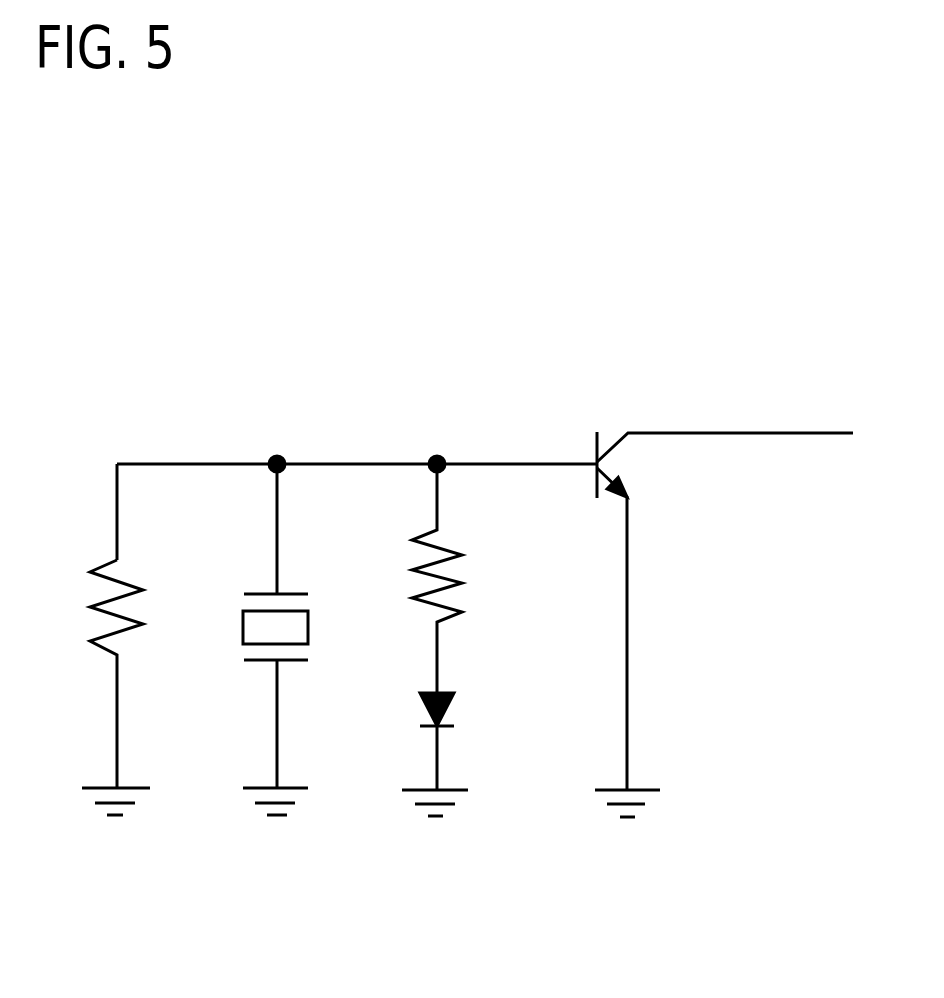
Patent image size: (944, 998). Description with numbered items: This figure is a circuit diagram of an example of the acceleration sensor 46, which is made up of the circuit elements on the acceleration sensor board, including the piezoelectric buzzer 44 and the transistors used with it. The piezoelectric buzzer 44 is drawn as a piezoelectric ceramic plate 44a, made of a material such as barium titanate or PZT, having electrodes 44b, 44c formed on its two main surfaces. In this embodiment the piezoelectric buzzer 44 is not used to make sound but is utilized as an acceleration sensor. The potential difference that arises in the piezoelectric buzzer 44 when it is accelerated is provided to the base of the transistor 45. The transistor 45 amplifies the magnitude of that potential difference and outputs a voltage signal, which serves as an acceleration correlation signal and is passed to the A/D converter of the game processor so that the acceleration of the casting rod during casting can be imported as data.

The piezoelectric buzzer 44 is at (279, 612).
The piezoelectric ceramic plate 44a is at (243, 612).
The electrode 44b is at (306, 594).
The electrode 44c is at (243, 661).
The transistor 45 is at (595, 470).
The acceleration sensor 46 is at (480, 426).